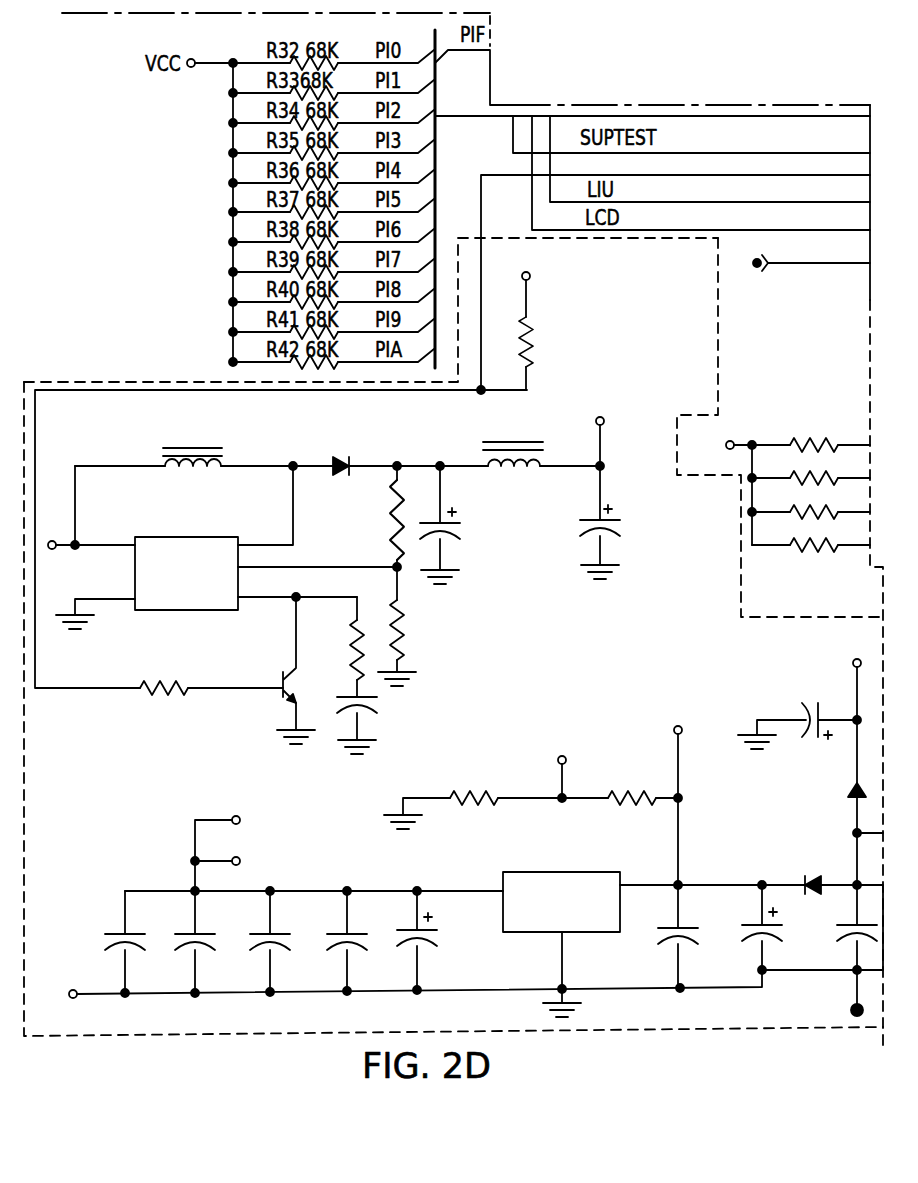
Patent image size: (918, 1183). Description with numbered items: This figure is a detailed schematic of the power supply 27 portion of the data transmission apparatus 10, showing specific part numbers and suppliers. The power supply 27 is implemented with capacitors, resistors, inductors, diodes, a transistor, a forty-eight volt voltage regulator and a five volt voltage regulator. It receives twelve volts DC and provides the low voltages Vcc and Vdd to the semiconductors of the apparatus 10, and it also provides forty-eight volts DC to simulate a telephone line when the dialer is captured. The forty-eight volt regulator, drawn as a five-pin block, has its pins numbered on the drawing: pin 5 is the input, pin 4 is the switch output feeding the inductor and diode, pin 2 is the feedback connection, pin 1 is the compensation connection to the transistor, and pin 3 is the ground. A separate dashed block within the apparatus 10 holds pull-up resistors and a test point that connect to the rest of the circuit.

The power supply 27 is at (102, 382).
The data transmission apparatus 10 is at (797, 398).
The regulator U8 pin 1 (VC) 1 is at (297, 586).
The regulator U8 pin 2 (VFB) 2 is at (317, 558).
The regulator U8 pin 3 (GND) 3 is at (95, 603).
The regulator U8 pin 4 (VSW) 4 is at (265, 505).
The regulator U8 pin 5 (VIN) 5 is at (95, 533).